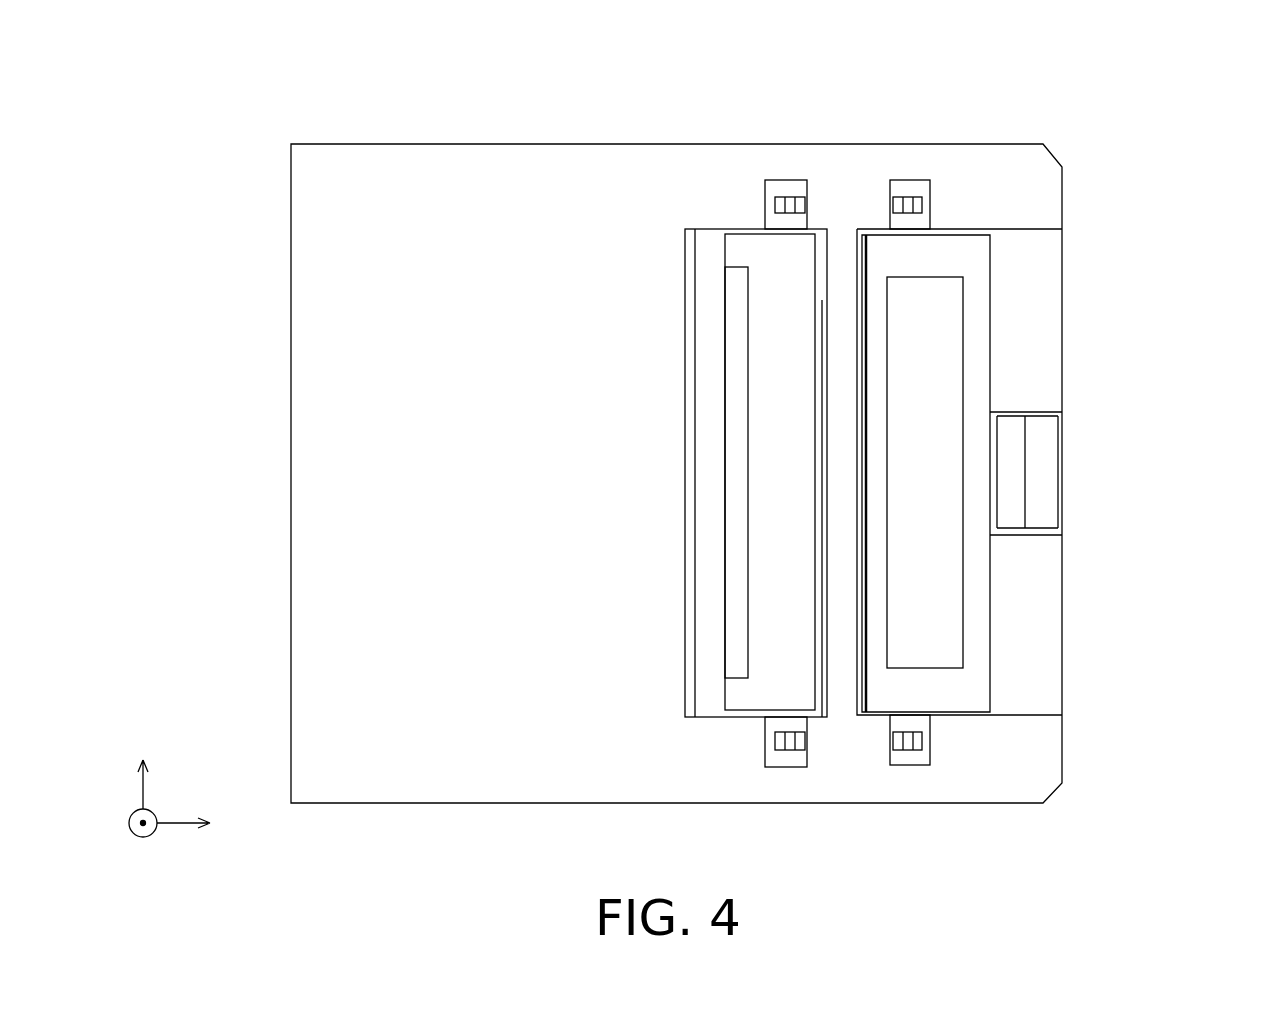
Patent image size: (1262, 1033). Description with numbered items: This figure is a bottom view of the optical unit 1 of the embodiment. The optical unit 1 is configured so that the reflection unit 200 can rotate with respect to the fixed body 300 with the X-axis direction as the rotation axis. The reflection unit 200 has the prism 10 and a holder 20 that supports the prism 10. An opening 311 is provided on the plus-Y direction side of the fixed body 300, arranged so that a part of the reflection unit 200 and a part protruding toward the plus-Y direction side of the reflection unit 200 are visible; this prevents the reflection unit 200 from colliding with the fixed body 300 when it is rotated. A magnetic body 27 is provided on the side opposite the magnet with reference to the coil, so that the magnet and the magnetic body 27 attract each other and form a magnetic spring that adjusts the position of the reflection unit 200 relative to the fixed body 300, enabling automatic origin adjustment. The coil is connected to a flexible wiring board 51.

The optical unit 1 is at (1142, 146).
The prism 10 is at (735, 610).
The holder 20 is at (785, 576).
The magnetic body 27 is at (930, 345).
The flexible wiring board 51 is at (1035, 468).
The reflection unit 200 is at (762, 252).
The fixed body 300 is at (588, 144).
The opening 311 is at (702, 297).